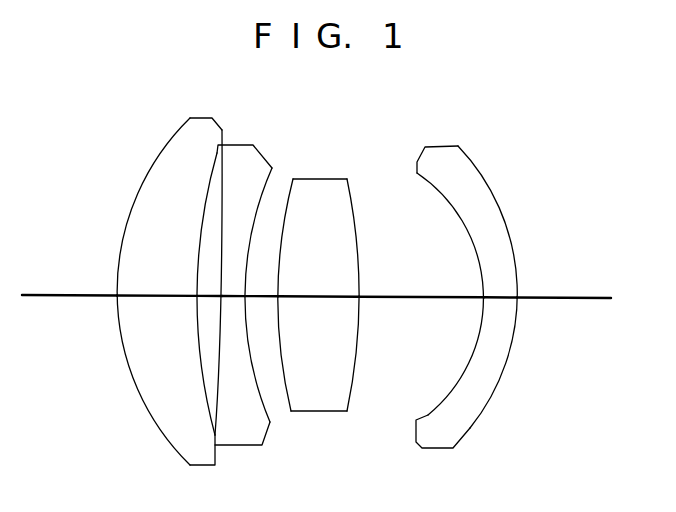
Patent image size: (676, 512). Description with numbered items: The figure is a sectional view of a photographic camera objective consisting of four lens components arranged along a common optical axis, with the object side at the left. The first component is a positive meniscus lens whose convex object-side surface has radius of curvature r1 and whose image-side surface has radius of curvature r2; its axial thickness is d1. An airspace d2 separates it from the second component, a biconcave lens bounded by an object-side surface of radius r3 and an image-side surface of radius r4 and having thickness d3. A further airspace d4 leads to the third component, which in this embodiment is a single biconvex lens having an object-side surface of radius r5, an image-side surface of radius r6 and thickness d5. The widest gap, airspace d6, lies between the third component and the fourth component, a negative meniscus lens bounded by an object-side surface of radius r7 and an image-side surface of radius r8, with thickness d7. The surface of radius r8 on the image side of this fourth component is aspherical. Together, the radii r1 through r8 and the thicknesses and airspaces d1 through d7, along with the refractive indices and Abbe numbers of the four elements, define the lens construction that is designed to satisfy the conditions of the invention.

The thickness of first lens component d1 is at (153, 296).
The airspace between first and second lens components d2 is at (208, 296).
The thickness of second lens component d3 is at (233, 296).
The airspace between second and third lens components d4 is at (261, 296).
The thickness of third lens component d5 is at (316, 296).
The airspace between third and fourth lens components d6 is at (423, 296).
The thickness of fourth lens component d7 is at (497, 296).
The radius of curvature of object-side surface of first lens component r1 is at (174, 449).
The radius of curvature of image-side surface of first lens component r2 is at (215, 450).
The radius of curvature of object-side surface of second lens component r3 is at (215, 422).
The radius of curvature of image-side surface of second lens component r4 is at (270, 418).
The radius of curvature of object-side surface of third lens component r5 is at (283, 400).
The radius of curvature of image-side surface of third lens component r6 is at (350, 395).
The radius of curvature of object-side surface of fourth lens component r7 is at (427, 414).
The radius of curvature of image-side surface of fourth lens component r8 is at (472, 428).